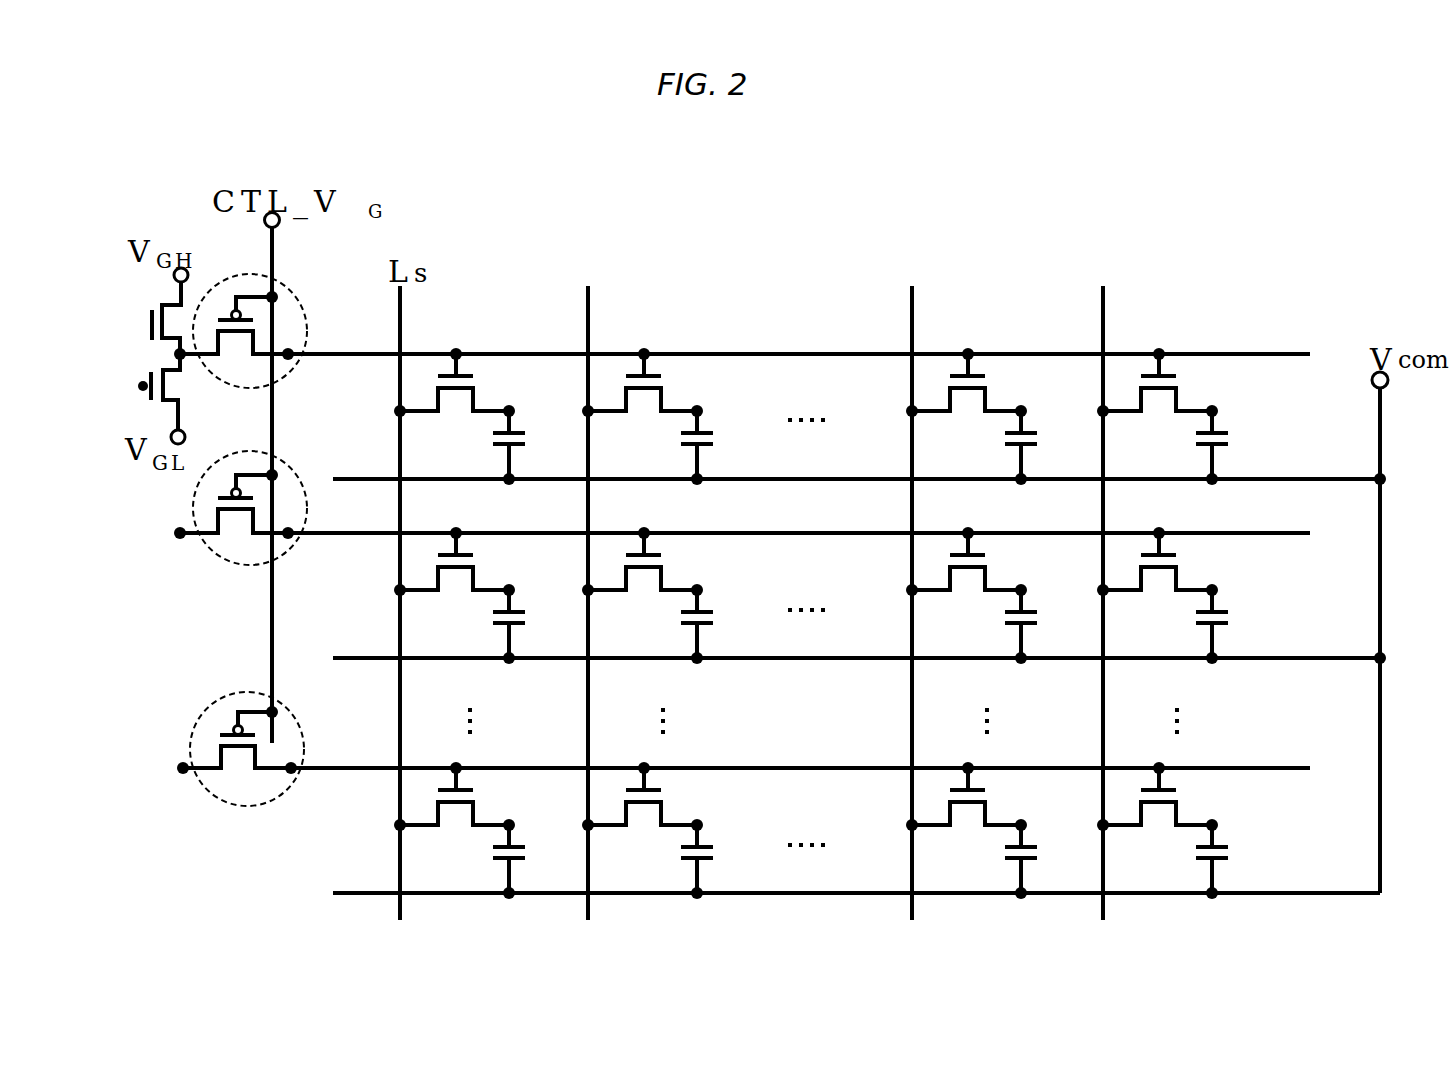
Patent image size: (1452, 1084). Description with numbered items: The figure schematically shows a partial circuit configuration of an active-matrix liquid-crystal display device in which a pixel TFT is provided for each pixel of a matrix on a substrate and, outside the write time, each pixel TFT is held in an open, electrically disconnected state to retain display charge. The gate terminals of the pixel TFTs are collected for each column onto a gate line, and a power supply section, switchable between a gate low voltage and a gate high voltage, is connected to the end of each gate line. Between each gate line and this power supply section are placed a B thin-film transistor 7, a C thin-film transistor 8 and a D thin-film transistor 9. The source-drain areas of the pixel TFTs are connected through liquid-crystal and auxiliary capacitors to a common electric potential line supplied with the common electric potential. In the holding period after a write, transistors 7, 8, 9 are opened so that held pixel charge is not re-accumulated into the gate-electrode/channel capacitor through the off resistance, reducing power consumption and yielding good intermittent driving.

The B thin-film transistor 7 is at (287, 282).
The C thin-film transistor 8 is at (210, 550).
The D thin-film transistor 9 is at (210, 792).